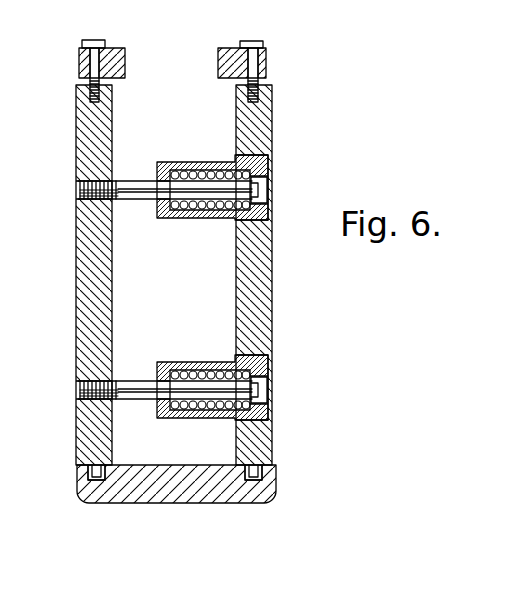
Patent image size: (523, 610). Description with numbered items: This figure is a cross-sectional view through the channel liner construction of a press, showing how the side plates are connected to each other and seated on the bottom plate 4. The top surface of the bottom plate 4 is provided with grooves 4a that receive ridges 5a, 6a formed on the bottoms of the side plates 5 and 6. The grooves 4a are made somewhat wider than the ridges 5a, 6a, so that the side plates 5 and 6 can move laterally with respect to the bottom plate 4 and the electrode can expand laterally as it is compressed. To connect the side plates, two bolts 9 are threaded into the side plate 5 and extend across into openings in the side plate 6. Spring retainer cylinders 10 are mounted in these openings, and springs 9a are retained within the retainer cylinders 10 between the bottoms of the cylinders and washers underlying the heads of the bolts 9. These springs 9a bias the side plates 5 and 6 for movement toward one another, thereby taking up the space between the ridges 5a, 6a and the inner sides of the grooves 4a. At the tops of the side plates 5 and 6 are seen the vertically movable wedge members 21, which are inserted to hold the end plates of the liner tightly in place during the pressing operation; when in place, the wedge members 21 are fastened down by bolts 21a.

The bottom plate 4 is at (178, 497).
The grooves 4a is at (102, 483).
The side plate 5 is at (78, 97).
The ridge 5a is at (80, 447).
The side plate 6 is at (262, 100).
The ridge 6a is at (276, 450).
The bolts 9 is at (261, 184).
The springs 9a is at (199, 208).
The spring retainer cylinders 10 is at (190, 162).
The wedge members 21 is at (80, 59).
The bolts 21a is at (92, 41).